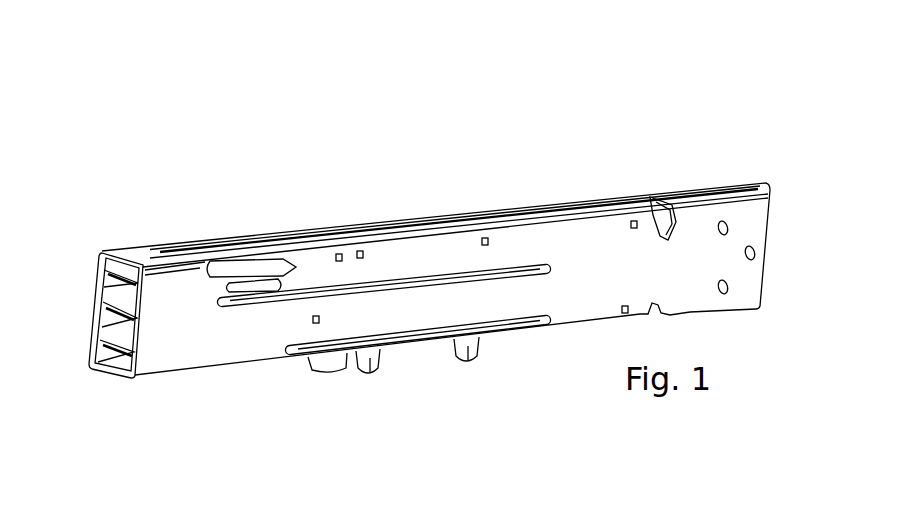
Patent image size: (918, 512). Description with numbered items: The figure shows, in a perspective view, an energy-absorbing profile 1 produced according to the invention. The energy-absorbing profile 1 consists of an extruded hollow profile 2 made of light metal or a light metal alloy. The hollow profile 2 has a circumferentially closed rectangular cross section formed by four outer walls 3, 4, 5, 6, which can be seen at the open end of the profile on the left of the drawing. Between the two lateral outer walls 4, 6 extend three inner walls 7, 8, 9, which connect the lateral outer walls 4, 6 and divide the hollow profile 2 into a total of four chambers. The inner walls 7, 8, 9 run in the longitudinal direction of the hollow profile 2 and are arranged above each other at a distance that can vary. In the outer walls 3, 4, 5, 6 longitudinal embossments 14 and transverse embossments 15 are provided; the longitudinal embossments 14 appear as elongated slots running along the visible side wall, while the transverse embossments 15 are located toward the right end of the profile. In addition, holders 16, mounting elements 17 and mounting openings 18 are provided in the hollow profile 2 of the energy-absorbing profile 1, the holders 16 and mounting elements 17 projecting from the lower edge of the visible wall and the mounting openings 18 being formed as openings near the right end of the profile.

The energy-absorbing profile 1 is at (671, 161).
The hollow profile 2 is at (212, 354).
The outer wall 3 is at (135, 250).
The lateral outer wall 4 is at (100, 288).
The outer wall 5 is at (110, 378).
The lateral outer wall 6 is at (170, 357).
The inner wall 7 is at (102, 277).
The inner wall 8 is at (96, 321).
The inner wall 9 is at (98, 354).
The longitudinal embossment 14 is at (442, 278).
The transverse embossment 15 is at (654, 196).
The holder 16 is at (370, 362).
The mounting element 17 is at (323, 372).
The mounting opening 18 is at (755, 250).